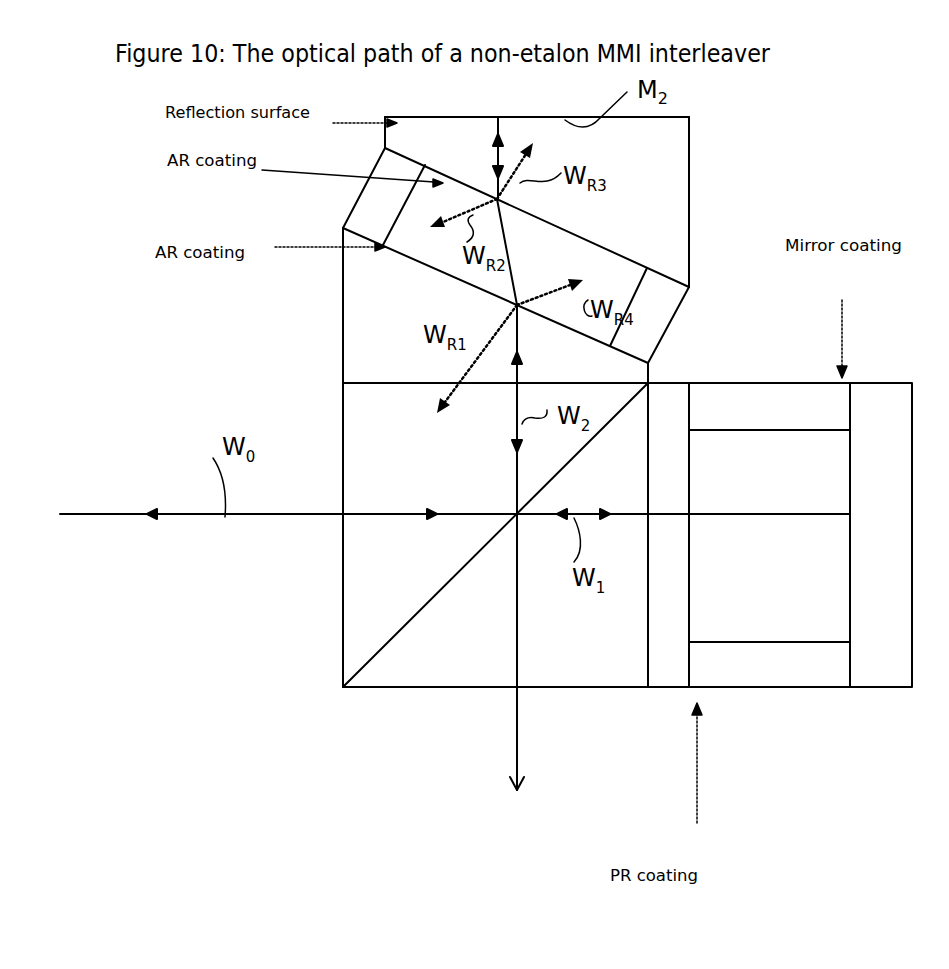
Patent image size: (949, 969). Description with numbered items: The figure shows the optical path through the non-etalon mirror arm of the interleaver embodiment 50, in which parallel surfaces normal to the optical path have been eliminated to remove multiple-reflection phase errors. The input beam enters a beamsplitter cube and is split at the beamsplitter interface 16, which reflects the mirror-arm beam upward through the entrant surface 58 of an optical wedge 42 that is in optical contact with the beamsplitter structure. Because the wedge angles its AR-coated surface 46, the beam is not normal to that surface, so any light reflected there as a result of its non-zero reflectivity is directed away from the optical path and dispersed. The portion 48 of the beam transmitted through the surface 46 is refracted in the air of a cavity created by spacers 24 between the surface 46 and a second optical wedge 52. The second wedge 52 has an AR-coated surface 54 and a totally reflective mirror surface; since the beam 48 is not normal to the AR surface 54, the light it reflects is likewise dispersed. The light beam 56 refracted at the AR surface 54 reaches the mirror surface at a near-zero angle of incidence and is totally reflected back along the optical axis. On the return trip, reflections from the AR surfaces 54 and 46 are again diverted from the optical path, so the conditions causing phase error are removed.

The beamsplitter interface 16 is at (435, 600).
The spacers 24 is at (373, 203).
The optical wedge 42 is at (363, 315).
The surface of the wedge 46 is at (448, 250).
The portion of the mirror-arm beam 48 is at (512, 257).
The embodiment 50 is at (790, 113).
The second optical wedge 52 is at (673, 183).
The AR-coated surface 54 is at (523, 226).
The light beam 56 is at (494, 152).
The entrant surface 58 is at (390, 384).